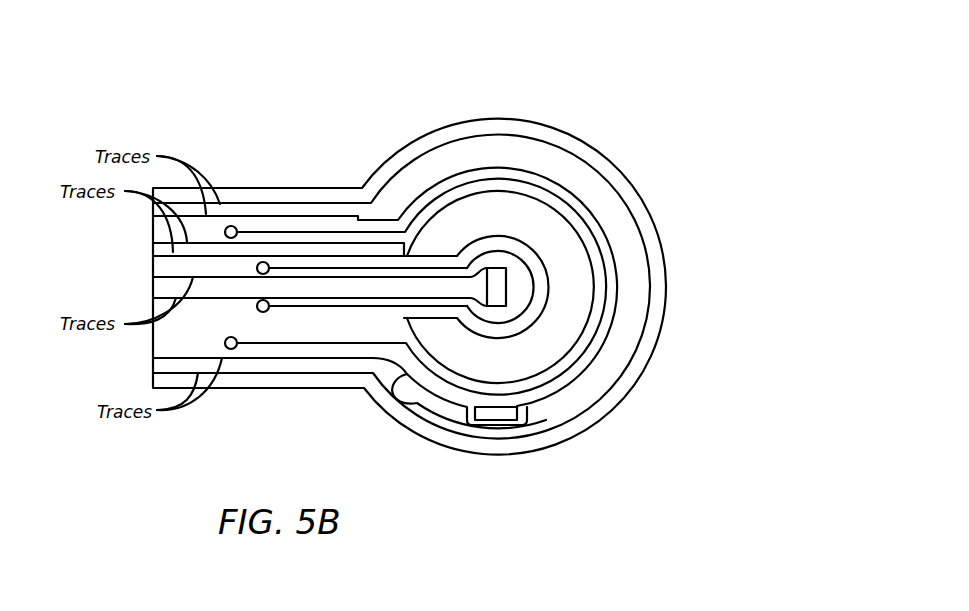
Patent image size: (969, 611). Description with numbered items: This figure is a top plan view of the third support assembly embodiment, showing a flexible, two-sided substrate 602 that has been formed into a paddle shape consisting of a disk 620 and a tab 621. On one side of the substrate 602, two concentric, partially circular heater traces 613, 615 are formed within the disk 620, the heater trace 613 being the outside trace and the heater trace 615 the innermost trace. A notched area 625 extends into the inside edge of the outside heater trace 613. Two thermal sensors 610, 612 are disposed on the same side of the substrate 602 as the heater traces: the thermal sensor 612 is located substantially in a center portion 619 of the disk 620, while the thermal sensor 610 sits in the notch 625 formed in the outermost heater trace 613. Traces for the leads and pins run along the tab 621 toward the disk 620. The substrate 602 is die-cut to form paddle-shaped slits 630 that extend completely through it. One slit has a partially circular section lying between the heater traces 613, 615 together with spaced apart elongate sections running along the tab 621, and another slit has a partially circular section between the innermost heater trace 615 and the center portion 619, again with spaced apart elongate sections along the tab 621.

The substrate 602 is at (320, 390).
The thermal sensor 610 is at (497, 422).
The thermal sensor 612 is at (507, 291).
The heater trace 613 is at (558, 250).
The heater trace 615 is at (625, 233).
The center portion 619 is at (520, 280).
The disk 620 is at (548, 101).
The tab 621 is at (313, 183).
The notched area 625 is at (527, 407).
The paddle-shaped slits 630 is at (540, 182).